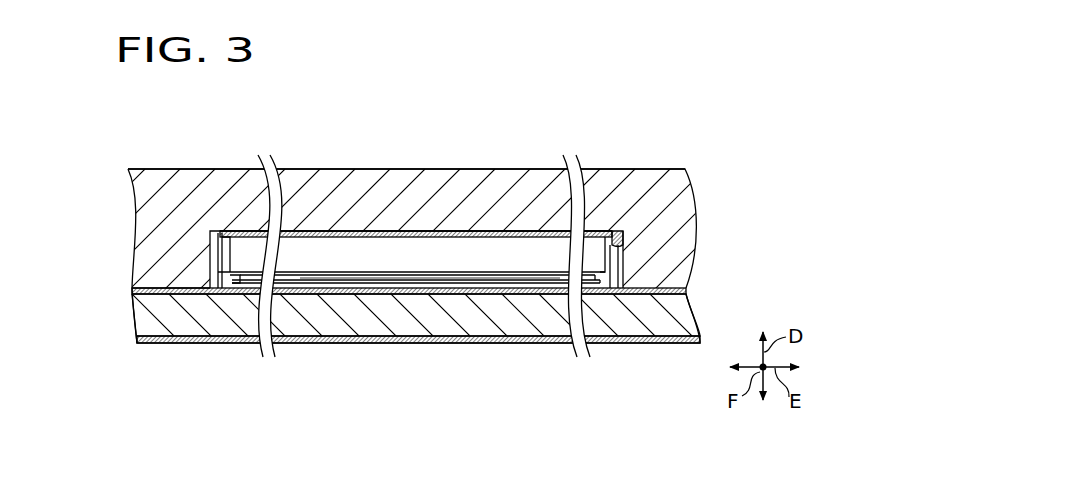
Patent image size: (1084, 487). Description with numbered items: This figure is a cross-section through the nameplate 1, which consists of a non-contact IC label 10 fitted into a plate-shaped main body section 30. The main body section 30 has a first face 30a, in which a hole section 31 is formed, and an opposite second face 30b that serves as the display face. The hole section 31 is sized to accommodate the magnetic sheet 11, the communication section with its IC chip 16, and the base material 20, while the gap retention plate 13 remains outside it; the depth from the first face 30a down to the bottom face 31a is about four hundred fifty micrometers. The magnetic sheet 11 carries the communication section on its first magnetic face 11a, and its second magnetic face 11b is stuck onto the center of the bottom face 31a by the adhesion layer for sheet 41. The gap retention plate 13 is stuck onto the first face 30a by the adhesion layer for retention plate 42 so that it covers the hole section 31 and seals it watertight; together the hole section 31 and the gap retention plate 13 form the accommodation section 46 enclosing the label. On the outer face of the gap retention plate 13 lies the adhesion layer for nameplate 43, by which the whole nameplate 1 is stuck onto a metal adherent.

The nameplate 1 is at (150, 168).
The non-contact IC label 10 is at (449, 346).
The magnetic sheet 11 is at (353, 250).
The first magnetic face 11a is at (212, 289).
The second magnetic face 11b is at (250, 231).
The gap retention plate 13 is at (325, 322).
The IC chip 16 is at (418, 275).
The base material 20 is at (600, 280).
The main body section 30 is at (682, 252).
The first face 30a is at (683, 289).
The second face 30b is at (660, 168).
The hole section 31 is at (618, 290).
The bottom face 31a is at (620, 238).
The adhesion layer for sheet 41 is at (455, 231).
The adhesion layer for retention plate 42 is at (132, 290).
The adhesion layer for nameplate 43 is at (140, 342).
The accommodation section 46 is at (215, 251).